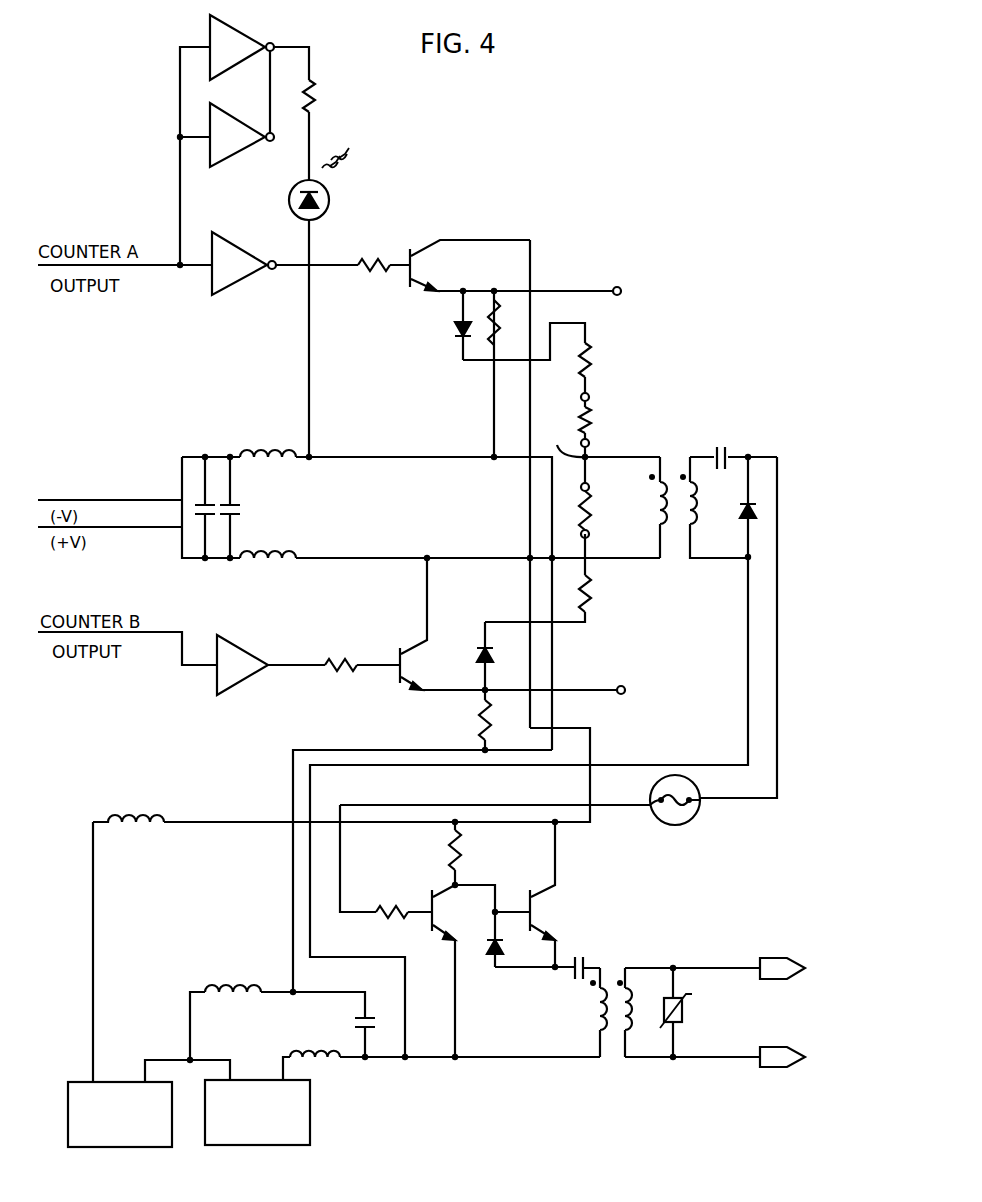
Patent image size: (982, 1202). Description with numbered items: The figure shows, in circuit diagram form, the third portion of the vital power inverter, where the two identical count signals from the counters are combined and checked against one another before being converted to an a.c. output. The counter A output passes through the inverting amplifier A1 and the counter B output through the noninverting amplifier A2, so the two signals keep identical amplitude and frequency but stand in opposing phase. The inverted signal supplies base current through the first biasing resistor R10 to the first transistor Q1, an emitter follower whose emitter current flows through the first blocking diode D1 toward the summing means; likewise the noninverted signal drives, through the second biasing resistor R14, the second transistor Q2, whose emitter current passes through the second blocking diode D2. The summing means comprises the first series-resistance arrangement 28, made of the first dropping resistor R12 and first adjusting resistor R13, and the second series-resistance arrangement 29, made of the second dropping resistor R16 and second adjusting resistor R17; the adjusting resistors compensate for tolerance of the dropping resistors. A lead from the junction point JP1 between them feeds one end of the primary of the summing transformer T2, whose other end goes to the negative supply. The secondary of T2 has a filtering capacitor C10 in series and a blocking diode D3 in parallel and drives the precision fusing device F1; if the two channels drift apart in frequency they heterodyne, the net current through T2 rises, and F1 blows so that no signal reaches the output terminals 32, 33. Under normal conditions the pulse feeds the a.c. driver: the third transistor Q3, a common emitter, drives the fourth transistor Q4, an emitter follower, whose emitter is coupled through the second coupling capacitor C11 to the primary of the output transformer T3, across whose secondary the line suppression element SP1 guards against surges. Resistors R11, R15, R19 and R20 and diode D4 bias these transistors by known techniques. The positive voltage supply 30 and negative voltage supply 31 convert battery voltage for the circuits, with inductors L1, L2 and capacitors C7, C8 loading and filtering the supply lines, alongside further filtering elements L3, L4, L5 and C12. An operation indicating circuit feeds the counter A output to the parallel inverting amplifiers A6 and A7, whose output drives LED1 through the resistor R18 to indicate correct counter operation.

The first series-resistance arrangement 28 is at (609, 388).
The second series-resistance arrangement 29 is at (563, 597).
The positive voltage supply 30 is at (86, 1080).
The negative voltage supply 31 is at (310, 1129).
The output terminal 32 is at (770, 954).
The output terminal 33 is at (774, 1070).
The inverting first amplifier A1 is at (226, 248).
The noninverting amplifier A2 is at (231, 651).
The inverting amplifier A6 is at (226, 28).
The inverting amplifier A7 is at (226, 118).
The first biasing resistor R10 is at (364, 253).
The resistor R11 is at (500, 320).
The first dropping resistor R12 is at (605, 361).
The first adjusting resistor R13 is at (605, 420).
The second biasing resistor R14 is at (338, 653).
The resistor R15 is at (464, 720).
The second dropping resistor R16 is at (617, 621).
The second adjusting resistor R17 is at (605, 507).
The resistor R18 is at (328, 96).
The resistor R19 is at (398, 901).
The resistor R20 is at (474, 853).
The light emitting diode LED1 is at (331, 200).
The first transistor Q1 is at (456, 266).
The second transistor Q2 is at (395, 639).
The third transistor Q3 is at (432, 961).
The fourth transistor Q4 is at (542, 894).
The first blocking diode D1 is at (455, 334).
The second blocking diode D2 is at (490, 665).
The blocking diode D3 is at (742, 512).
The diode D4 is at (490, 952).
The junction point JP1 is at (559, 445).
The summing transformer T2 is at (698, 497).
The output transformer T3 is at (611, 1001).
The filtering capacitor C7 is at (245, 506).
The filtering capacitor C8 is at (195, 516).
The filtering capacitor C10 is at (732, 457).
The second coupling capacitor C11 is at (570, 970).
The capacitor C12 is at (358, 1016).
The loading and filtering inductor L1 is at (268, 447).
The loading and filtering inductor L2 is at (278, 565).
The inductor L3 is at (137, 814).
The inductor L4 is at (238, 983).
The inductor L5 is at (319, 1048).
The precision fusing device F1 is at (657, 821).
The line suppression element SP1 is at (686, 1017).